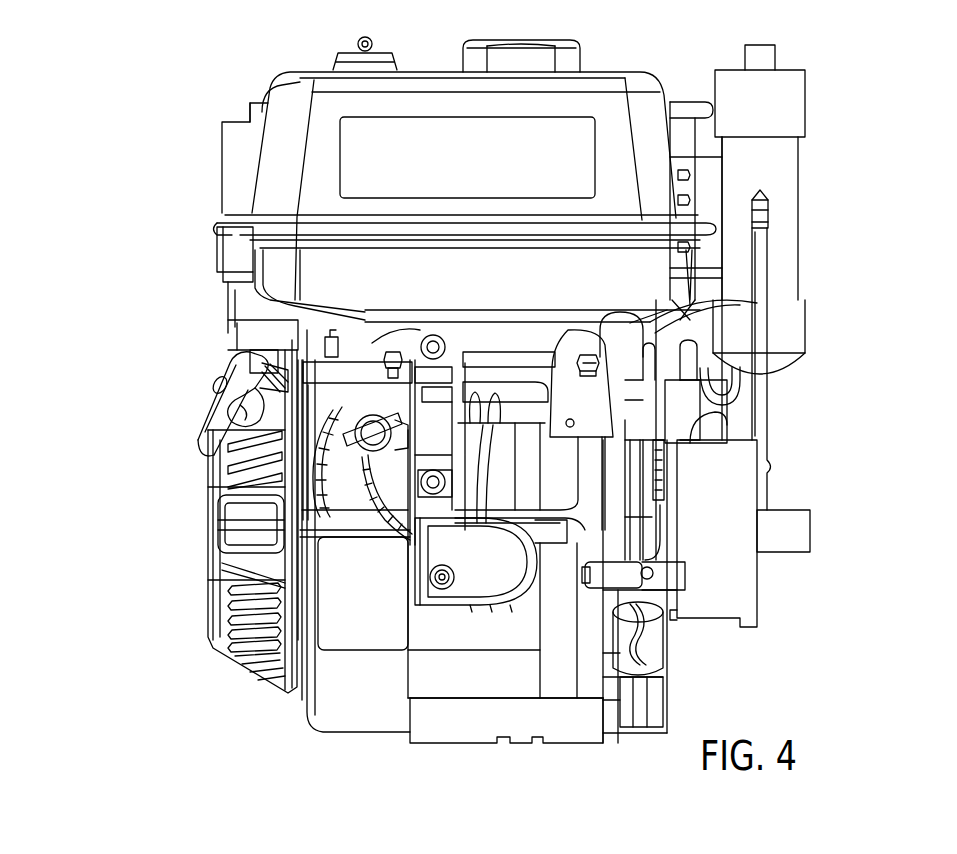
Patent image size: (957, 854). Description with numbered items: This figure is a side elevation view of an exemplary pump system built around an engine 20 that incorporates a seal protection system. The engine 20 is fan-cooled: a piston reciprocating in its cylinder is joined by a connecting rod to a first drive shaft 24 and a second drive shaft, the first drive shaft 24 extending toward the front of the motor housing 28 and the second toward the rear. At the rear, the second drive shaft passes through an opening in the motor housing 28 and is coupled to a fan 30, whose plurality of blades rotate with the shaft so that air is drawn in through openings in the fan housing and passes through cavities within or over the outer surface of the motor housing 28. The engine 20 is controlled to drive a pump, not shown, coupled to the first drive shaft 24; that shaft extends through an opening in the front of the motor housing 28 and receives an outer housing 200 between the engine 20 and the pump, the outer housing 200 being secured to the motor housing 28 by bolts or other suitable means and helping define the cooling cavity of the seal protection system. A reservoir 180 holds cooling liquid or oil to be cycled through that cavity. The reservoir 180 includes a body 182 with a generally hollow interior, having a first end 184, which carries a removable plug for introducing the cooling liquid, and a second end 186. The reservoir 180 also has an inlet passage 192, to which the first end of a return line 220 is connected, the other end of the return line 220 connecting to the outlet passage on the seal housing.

The engine 20 is at (243, 692).
The first drive shaft 24 is at (790, 512).
The motor housing 28 is at (520, 700).
The fan 30 is at (212, 648).
The reservoir 180 is at (810, 170).
The body 182 is at (778, 250).
The first end 184 is at (792, 70).
The second end 186 is at (790, 365).
The inlet passage 192 is at (771, 218).
The outer housing 200 is at (710, 620).
The return line 220 is at (768, 284).